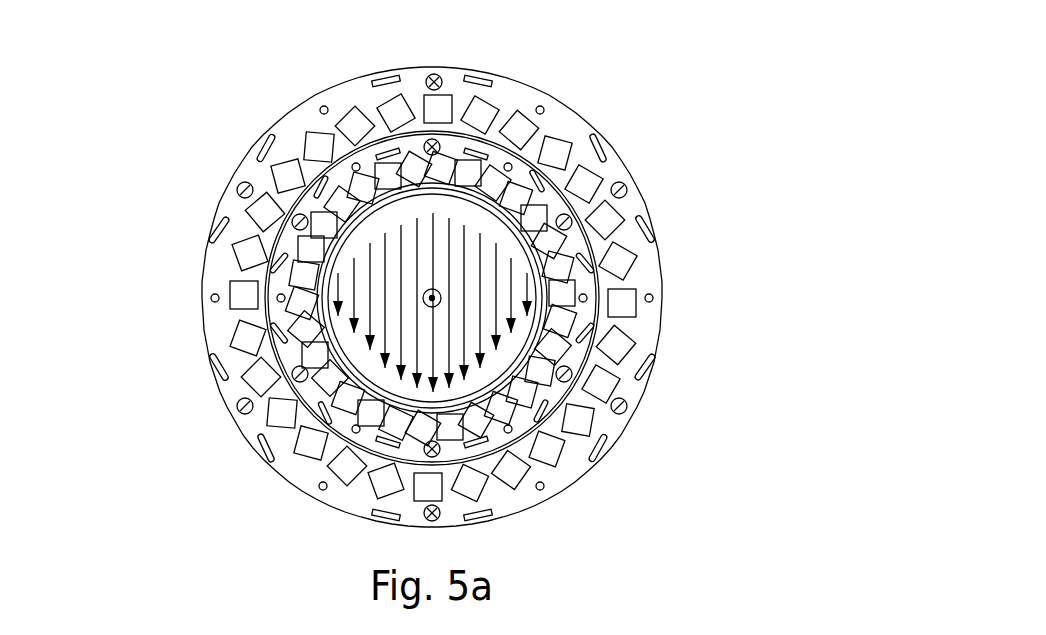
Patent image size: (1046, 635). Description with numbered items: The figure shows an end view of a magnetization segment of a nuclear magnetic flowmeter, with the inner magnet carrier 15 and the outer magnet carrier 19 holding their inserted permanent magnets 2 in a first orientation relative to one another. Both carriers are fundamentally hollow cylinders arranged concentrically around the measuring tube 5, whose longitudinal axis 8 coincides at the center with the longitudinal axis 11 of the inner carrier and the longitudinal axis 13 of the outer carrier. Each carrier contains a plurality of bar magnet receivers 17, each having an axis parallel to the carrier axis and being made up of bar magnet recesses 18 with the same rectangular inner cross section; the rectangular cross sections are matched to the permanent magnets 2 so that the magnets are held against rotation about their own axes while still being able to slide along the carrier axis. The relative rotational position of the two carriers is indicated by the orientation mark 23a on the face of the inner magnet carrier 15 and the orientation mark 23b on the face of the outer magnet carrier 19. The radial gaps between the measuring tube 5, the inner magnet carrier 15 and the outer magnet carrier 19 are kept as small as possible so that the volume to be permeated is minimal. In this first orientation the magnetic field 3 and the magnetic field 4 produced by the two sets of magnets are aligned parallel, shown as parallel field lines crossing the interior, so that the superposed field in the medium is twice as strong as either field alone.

The permanent magnets 2 is at (247, 300).
The magnetic field 3 is at (478, 231).
The magnetic field 4 is at (551, 255).
The measuring tube 5 is at (542, 296).
The longitudinal axis of the measuring tube 8 is at (440, 295).
The longitudinal axis of the inner carrier 11 is at (615, 256).
The longitudinal axis of the outer carrier 13 is at (615, 256).
The inner magnet carrier 15 is at (334, 165).
The bar magnet receivers 17 is at (267, 415).
The bar magnet recesses 18 is at (380, 488).
The outer magnet carrier 19 is at (350, 95).
The orientation mark 23a is at (545, 137).
The orientation mark 23b is at (552, 100).